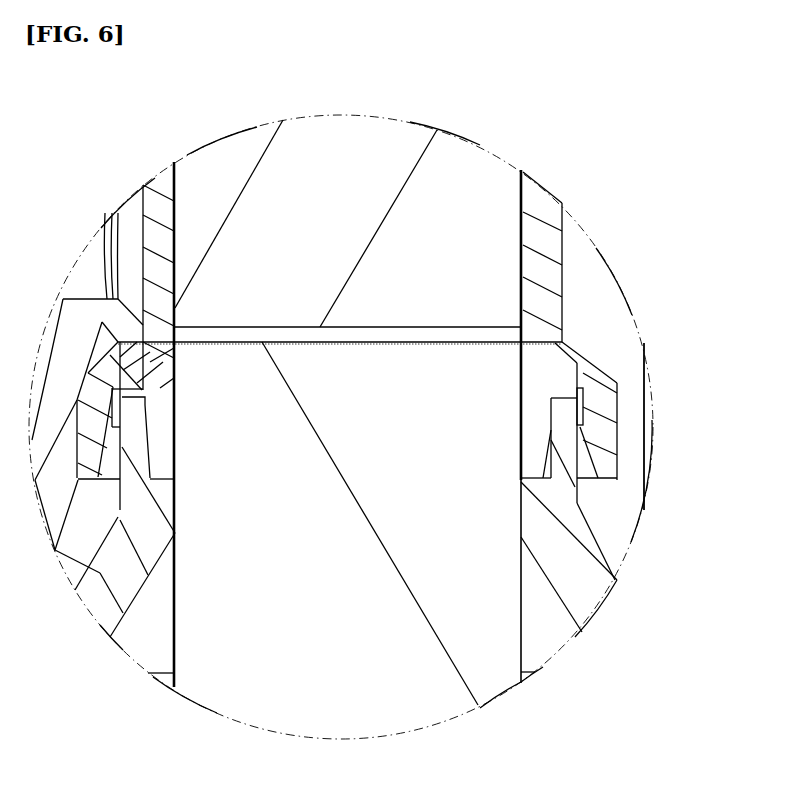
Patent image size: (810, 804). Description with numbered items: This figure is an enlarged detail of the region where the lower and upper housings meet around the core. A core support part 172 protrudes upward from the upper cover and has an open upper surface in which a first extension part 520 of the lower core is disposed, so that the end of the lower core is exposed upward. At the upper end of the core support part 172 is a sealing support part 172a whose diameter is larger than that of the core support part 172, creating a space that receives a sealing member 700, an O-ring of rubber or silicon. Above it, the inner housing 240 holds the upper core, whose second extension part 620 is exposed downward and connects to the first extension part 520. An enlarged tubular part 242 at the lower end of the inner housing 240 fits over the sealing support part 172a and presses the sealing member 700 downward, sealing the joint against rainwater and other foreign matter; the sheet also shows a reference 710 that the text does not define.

The second extension part 620 is at (470, 185).
The inner housing 240 is at (546, 240).
The sealing member 710 is at (560, 356).
The sealing member 700 is at (545, 378).
The enlarged tubular part 242 is at (603, 406).
The sealing support part 172a is at (560, 443).
The first extension part 520 is at (455, 548).
The core support part 172 is at (590, 575).